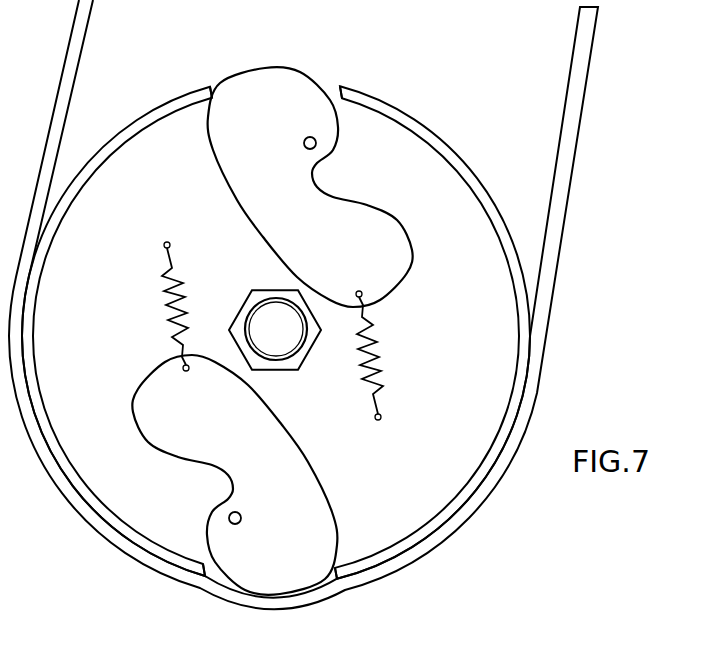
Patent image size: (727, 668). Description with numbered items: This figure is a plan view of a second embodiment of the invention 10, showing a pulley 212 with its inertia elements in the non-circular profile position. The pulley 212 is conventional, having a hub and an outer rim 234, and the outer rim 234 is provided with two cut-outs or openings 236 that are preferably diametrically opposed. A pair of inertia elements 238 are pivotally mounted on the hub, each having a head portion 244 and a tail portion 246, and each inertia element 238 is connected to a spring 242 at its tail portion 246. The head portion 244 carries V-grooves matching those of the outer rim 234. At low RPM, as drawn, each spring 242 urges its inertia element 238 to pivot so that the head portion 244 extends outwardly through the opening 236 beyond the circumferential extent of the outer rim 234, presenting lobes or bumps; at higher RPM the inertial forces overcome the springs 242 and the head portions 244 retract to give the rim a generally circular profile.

The rail guide track 10 is at (567, 176).
The pulley 212 is at (450, 142).
The outer rim 234 is at (166, 104).
The cut-outs or openings 236 is at (332, 87).
The inertia element 238 is at (393, 249).
The spring 242 is at (166, 291).
The head portion 244 is at (273, 76).
The tail portion 246 is at (395, 283).